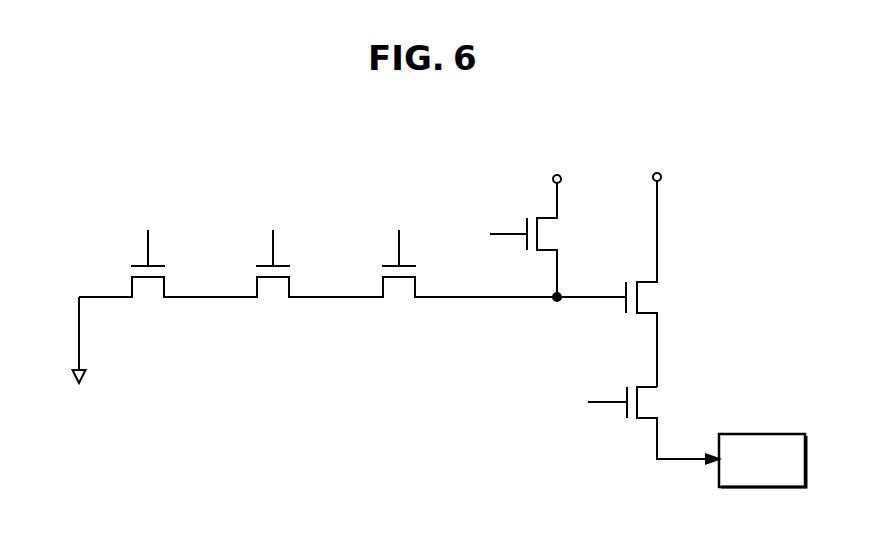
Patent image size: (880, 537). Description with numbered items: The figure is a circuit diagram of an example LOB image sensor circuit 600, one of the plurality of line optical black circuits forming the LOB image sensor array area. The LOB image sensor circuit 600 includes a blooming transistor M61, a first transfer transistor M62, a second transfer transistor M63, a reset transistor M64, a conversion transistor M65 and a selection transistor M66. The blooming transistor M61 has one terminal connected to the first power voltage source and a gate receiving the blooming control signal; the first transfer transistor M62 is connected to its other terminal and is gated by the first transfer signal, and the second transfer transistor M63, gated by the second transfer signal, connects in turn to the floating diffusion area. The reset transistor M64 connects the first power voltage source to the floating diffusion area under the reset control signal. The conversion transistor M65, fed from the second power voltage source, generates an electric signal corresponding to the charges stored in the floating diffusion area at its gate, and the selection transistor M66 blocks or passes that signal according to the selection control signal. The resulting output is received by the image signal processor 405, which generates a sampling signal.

The LOB image sensor circuit 600 is at (735, 170).
The image signal processor 405 is at (765, 434).
The blooming transistor M61 is at (148, 265).
The first transfer transistor M62 is at (273, 264).
The second transfer transistor M63 is at (400, 264).
The reset transistor M64 is at (526, 235).
The conversion transistor M65 is at (663, 265).
The selection transistor M66 is at (631, 425).